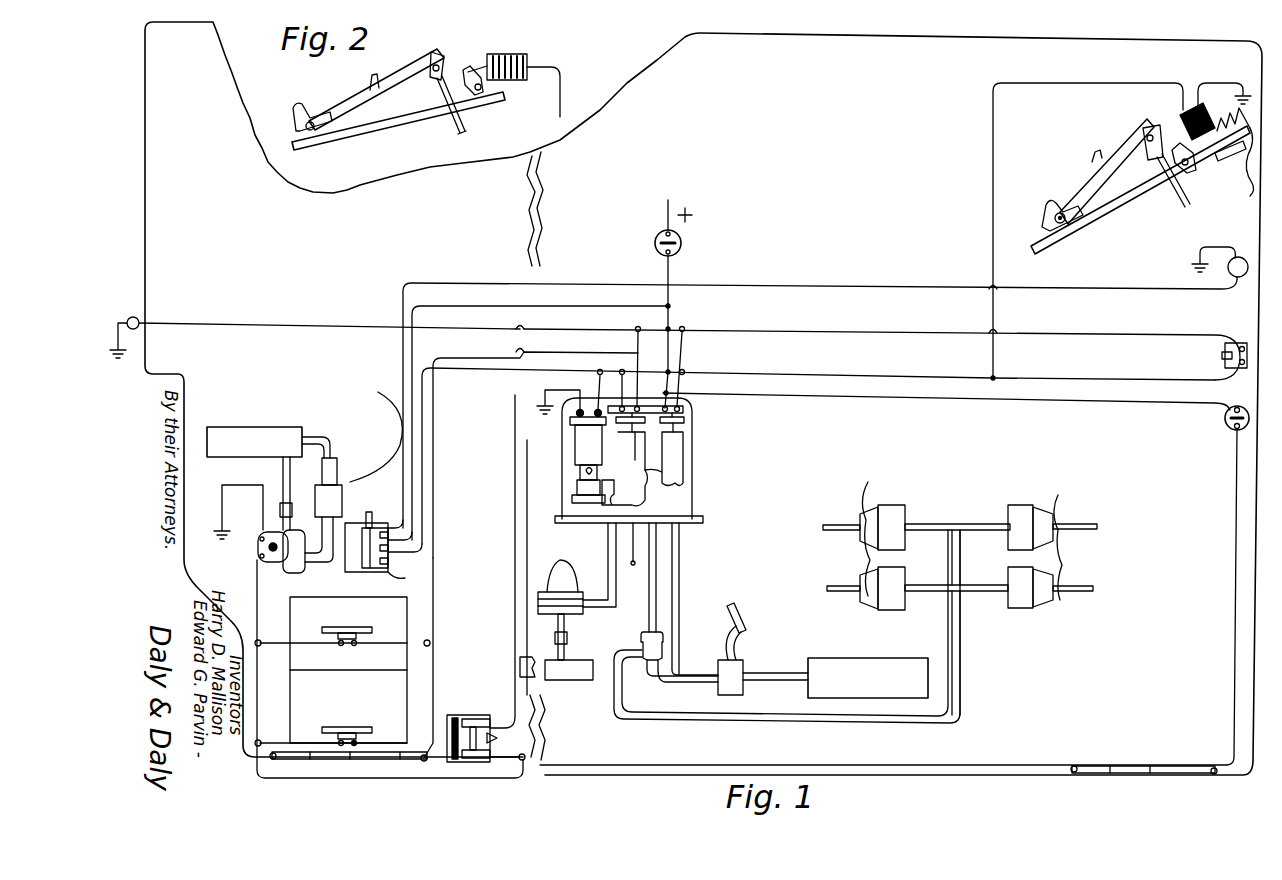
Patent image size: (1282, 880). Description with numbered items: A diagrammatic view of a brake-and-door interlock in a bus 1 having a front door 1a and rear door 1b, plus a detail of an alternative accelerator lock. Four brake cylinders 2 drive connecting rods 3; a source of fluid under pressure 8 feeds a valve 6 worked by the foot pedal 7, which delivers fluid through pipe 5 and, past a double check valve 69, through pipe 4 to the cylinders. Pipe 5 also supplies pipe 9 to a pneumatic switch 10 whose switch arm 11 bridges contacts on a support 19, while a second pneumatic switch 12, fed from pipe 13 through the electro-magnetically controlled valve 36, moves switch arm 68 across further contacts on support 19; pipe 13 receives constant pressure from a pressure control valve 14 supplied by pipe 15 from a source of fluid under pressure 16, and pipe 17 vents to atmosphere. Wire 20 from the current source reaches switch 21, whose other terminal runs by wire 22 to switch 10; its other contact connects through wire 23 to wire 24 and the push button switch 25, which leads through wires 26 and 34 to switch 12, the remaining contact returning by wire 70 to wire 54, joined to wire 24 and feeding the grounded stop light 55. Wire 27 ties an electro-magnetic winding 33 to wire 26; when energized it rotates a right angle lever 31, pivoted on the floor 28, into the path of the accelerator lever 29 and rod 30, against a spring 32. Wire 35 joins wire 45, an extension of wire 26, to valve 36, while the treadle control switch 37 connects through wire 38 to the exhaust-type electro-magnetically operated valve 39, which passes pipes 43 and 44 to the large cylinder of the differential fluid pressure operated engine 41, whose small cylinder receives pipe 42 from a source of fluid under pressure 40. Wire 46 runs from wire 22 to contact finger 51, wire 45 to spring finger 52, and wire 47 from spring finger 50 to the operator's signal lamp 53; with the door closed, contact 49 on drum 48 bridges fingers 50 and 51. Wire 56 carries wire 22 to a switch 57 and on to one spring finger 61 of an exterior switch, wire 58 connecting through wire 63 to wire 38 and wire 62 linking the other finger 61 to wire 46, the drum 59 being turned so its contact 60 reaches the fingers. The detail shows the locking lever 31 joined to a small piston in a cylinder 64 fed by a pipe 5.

In FIG. 1, the bus 1 is at (756, 34).
In FIG. 1, the front door 1a is at (1138, 766).
In FIG. 1, the rear door 1b is at (375, 756).
In FIG. 1, the brake cylinders 2 is at (1028, 573).
In FIG. 1, the connecting rods 3 is at (830, 577).
In FIG. 1, the pipe 4 is at (962, 640).
In FIG. 2, the pipe 5 is at (561, 100).
In FIG. 1, the pipe 5 is at (649, 620).
In FIG. 1, the valve 6 is at (745, 666).
In FIG. 1, the foot pedal 7 is at (738, 629).
In FIG. 1, the source of fluid under pressure 8 is at (876, 662).
In FIG. 1, the pipe 9 is at (682, 572).
In FIG. 1, the pneumatic switch 10 is at (680, 453).
In FIG. 1, the switch arm 11 is at (688, 424).
In FIG. 1, the second pneumatic switch 12 is at (680, 478).
In FIG. 1, the pipe 13 is at (608, 545).
In FIG. 1, the pressure control valve 14 is at (563, 567).
In FIG. 1, the pipe 15 is at (566, 628).
In FIG. 1, the source of fluid under pressure 16 is at (566, 678).
In FIG. 1, the pipe 17 is at (633, 568).
In FIG. 1, the support 19 is at (700, 408).
In FIG. 1, the wire 20 is at (690, 205).
In FIG. 1, the switch 21 is at (682, 247).
In FIG. 1, the wire 22 is at (672, 320).
In FIG. 1, the wire 23 is at (684, 352).
In FIG. 1, the wire 24 is at (1060, 334).
In FIG. 1, the push button switch 25 is at (1222, 356).
In FIG. 1, the wire 26 is at (851, 373).
In FIG. 1, the wire 27 is at (992, 259).
In FIG. 2, the floor 28 is at (395, 123).
In FIG. 1, the floor 28 is at (1118, 209).
In FIG. 2, the accelerator lever 29 is at (372, 90).
In FIG. 1, the accelerator lever 29 is at (1112, 155).
In FIG. 2, the rod 30 is at (466, 125).
In FIG. 1, the rod 30 is at (1190, 203).
In FIG. 2, the right angle lever 31 is at (470, 68).
In FIG. 1, the right angle lever 31 is at (1226, 158).
In FIG. 1, the spring 32 is at (1235, 173).
In FIG. 1, the electro-magnetic winding 33 is at (1180, 116).
In FIG. 1, the wire 34 is at (623, 368).
In FIG. 1, the wire 35 is at (603, 366).
In FIG. 1, the electro-magnetically controlled valve 36 is at (585, 436).
In FIG. 1, the treadle control switch 37 is at (352, 630).
In FIG. 1, the wire 38 is at (256, 603).
In FIG. 1, the electro-magnetically operated valve 39 is at (275, 564).
In FIG. 1, the source of fluid under pressure 40 is at (283, 437).
In FIG. 1, the differential fluid pressure operated engine 41 is at (342, 494).
In FIG. 1, the pipe 42 is at (333, 446).
In FIG. 1, the pipe 43 is at (310, 562).
In FIG. 1, the pipe 44 is at (284, 480).
In FIG. 1, the wire 45 is at (422, 423).
In FIG. 1, the wire 46 is at (412, 393).
In FIG. 1, the wire 47 is at (855, 284).
In FIG. 1, the drum 48 is at (360, 524).
In FIG. 1, the contact 49 is at (384, 576).
In FIG. 1, the spring finger 50 is at (392, 534).
In FIG. 1, the contact finger 51 is at (398, 548).
In FIG. 1, the spring finger 52 is at (400, 568).
In FIG. 1, the operator's signal lamp 53 is at (1240, 280).
In FIG. 1, the wire 54 is at (345, 323).
In FIG. 1, the stop light 55 is at (143, 320).
In FIG. 1, the wire 56 is at (850, 395).
In FIG. 1, the switch 57 is at (1230, 425).
In FIG. 1, the wire 58 is at (1233, 688).
In FIG. 1, the drum 59 is at (470, 717).
In FIG. 1, the contact 60 is at (450, 716).
In FIG. 1, the spring fingers 61 is at (493, 752).
In FIG. 1, the wire 62 is at (513, 630).
In FIG. 1, the wire 63 is at (523, 778).
In FIG. 2, the cylinder 64 is at (528, 54).
In FIG. 1, the switch arm 68 is at (617, 424).
In FIG. 1, the double check valve 69 is at (662, 645).
In FIG. 1, the wire 70 is at (642, 340).